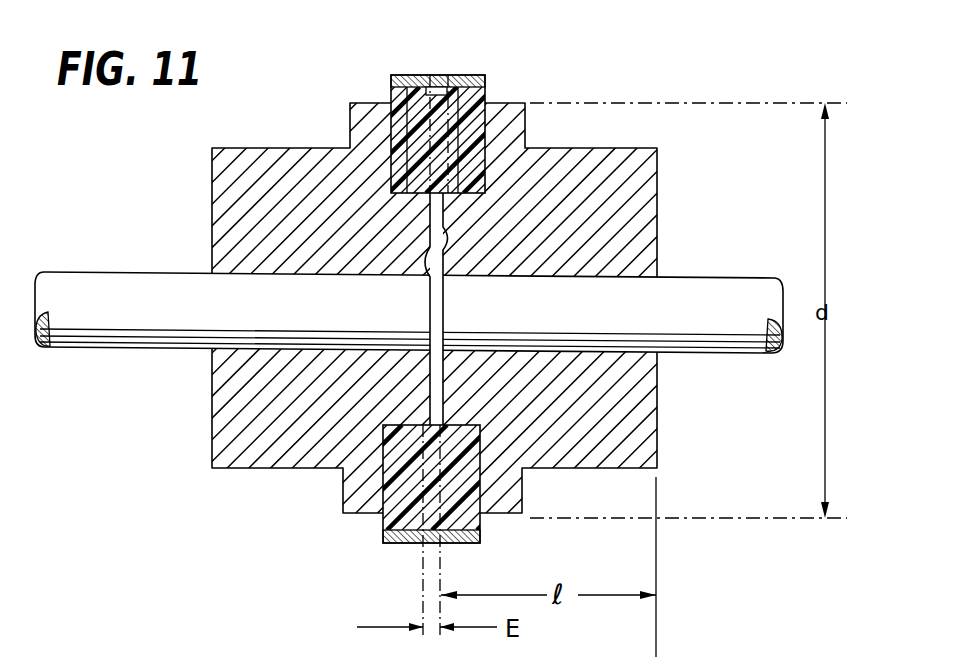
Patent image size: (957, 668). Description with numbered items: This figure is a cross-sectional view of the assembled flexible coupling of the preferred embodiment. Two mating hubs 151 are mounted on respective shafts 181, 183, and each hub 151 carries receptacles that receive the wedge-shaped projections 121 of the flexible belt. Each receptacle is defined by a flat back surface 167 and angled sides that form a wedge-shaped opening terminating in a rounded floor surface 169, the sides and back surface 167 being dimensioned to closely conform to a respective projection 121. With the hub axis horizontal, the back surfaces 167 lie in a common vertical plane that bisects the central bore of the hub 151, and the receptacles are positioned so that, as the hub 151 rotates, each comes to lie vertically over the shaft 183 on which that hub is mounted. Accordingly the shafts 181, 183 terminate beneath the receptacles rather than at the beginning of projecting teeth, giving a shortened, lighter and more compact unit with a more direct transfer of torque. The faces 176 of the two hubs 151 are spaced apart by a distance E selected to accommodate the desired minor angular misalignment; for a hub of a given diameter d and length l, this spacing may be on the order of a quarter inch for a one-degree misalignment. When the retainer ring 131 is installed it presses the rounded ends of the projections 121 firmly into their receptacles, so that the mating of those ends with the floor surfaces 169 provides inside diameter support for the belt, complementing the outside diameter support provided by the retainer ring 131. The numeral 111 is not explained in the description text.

The offset axis of lower insert 111 is at (421, 553).
The projection 121 is at (460, 75).
The retainer ring 131 is at (480, 76).
The mating hub 151 is at (278, 148).
The back surface 167 is at (413, 78).
The floor surface 169 is at (400, 187).
The face 176 is at (425, 270).
The shaft 181 is at (738, 290).
The shaft 183 is at (140, 287).